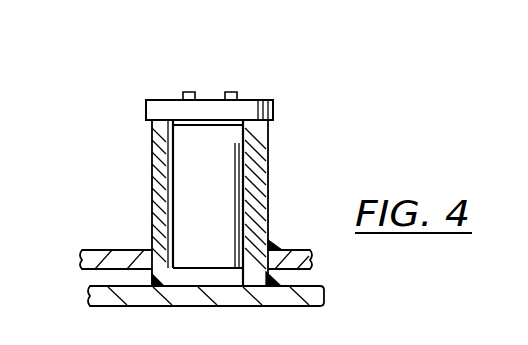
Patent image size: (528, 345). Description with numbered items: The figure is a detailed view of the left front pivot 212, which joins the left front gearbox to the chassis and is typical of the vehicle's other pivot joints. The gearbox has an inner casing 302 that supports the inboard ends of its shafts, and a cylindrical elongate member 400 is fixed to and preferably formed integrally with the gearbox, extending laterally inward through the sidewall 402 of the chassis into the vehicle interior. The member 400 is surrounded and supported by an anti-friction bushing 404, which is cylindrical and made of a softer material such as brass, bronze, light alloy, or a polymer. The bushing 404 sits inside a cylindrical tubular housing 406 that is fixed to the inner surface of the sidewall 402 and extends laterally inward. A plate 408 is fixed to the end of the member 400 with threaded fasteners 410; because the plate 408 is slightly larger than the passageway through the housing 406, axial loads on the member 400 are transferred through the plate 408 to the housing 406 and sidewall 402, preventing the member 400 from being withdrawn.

The left front pivot 212 is at (295, 168).
The inner casing 302 is at (120, 306).
The cylindrical elongate member 400 is at (227, 203).
The sidewall 402 is at (102, 250).
The anti-friction bushing 404 is at (151, 165).
The housing 406 is at (268, 139).
The plate 408 is at (274, 103).
The threaded fasteners 410 is at (186, 91).